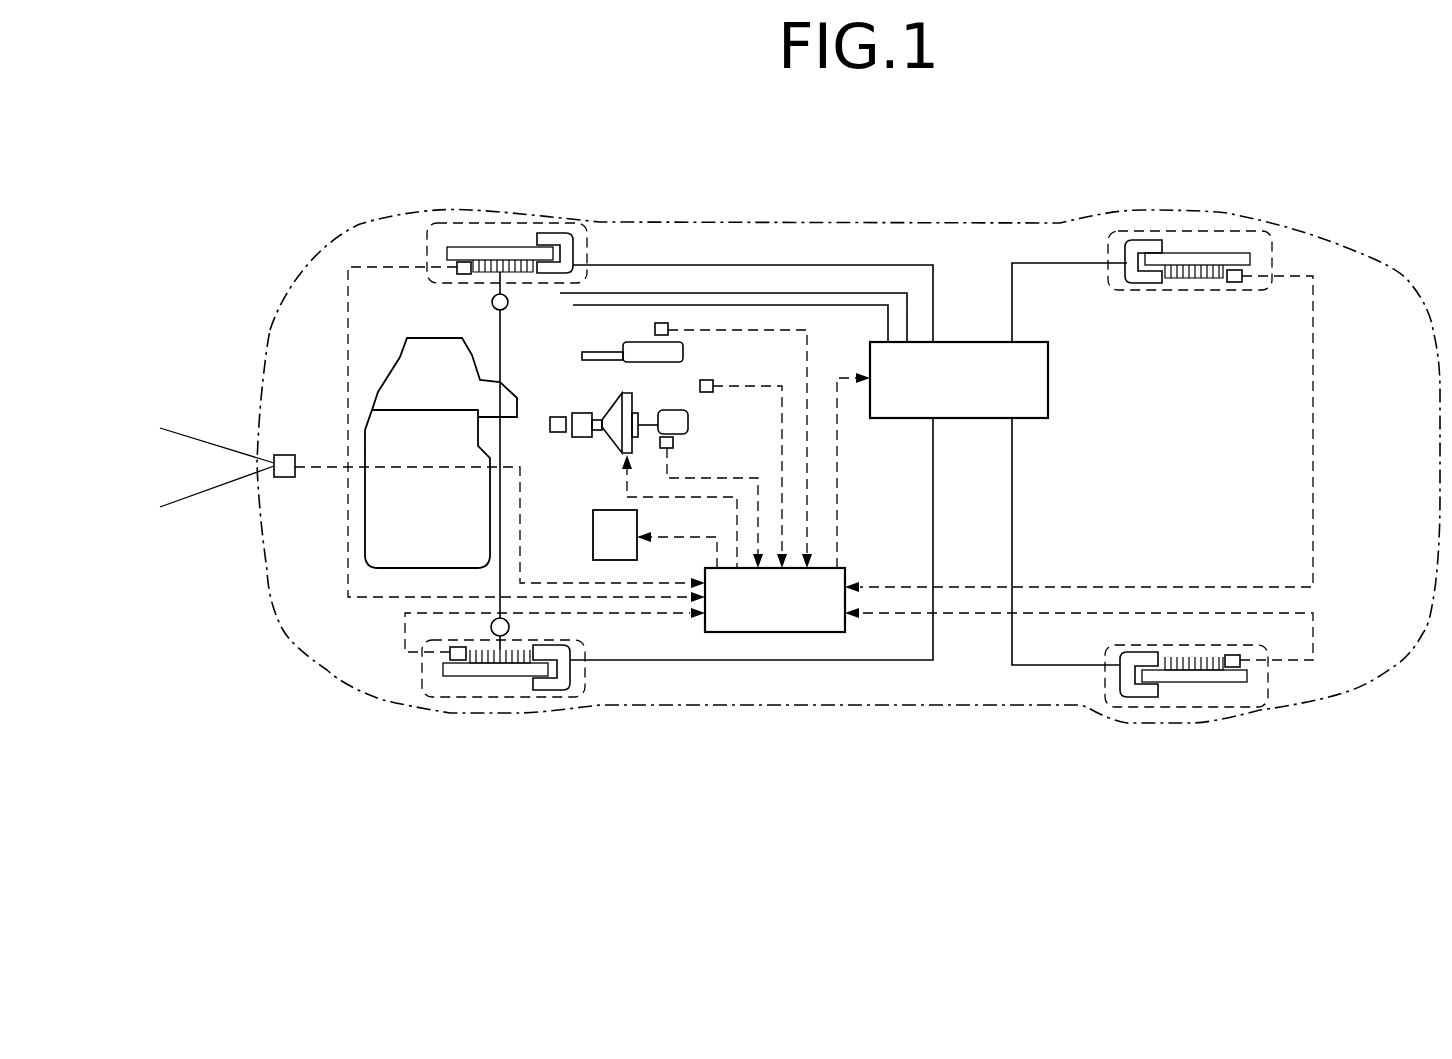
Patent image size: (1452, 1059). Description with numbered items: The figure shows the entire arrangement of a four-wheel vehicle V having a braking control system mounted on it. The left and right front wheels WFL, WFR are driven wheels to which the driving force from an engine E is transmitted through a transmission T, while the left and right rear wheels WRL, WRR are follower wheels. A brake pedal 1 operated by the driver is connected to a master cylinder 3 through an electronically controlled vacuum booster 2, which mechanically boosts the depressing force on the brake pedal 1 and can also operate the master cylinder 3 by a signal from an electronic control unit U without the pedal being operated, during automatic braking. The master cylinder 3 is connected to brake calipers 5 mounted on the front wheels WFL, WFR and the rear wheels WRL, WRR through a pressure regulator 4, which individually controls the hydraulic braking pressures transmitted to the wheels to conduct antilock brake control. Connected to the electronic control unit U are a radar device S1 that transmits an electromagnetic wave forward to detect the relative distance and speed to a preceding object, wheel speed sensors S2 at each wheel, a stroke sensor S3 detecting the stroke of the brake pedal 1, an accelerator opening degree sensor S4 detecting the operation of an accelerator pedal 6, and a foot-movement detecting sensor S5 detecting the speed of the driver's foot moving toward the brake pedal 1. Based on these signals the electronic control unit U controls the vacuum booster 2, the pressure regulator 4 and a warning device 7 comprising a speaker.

The four-wheel vehicle V is at (847, 180).
The right front wheel WFR is at (470, 218).
The right rear wheel WRR is at (1178, 225).
The left front wheel WFL is at (473, 705).
The left rear wheel WRL is at (1170, 708).
The brake caliper 5 is at (553, 230).
The radar device S1 is at (286, 478).
The wheel speed sensor S2 is at (456, 268).
The stroke sensor S3 is at (673, 446).
The accelerator opening degree sensor S4 is at (655, 328).
The foot-movement detecting sensor S5 is at (708, 380).
The brake pedal 1 is at (688, 424).
The electronically controlled vacuum booster 2 is at (622, 450).
The master cylinder 3 is at (562, 433).
The pressure regulator 4 is at (972, 399).
The accelerator pedal 6 is at (643, 356).
The warning device 7 is at (626, 554).
The transmission T is at (445, 389).
The engine E is at (430, 515).
The electronic control unit U is at (786, 620).